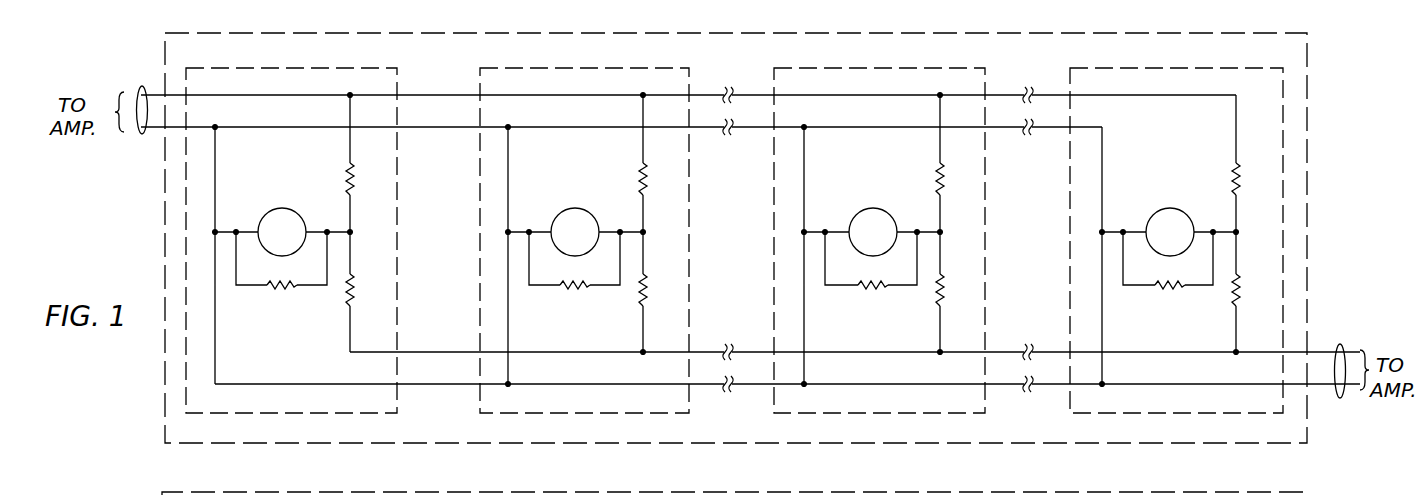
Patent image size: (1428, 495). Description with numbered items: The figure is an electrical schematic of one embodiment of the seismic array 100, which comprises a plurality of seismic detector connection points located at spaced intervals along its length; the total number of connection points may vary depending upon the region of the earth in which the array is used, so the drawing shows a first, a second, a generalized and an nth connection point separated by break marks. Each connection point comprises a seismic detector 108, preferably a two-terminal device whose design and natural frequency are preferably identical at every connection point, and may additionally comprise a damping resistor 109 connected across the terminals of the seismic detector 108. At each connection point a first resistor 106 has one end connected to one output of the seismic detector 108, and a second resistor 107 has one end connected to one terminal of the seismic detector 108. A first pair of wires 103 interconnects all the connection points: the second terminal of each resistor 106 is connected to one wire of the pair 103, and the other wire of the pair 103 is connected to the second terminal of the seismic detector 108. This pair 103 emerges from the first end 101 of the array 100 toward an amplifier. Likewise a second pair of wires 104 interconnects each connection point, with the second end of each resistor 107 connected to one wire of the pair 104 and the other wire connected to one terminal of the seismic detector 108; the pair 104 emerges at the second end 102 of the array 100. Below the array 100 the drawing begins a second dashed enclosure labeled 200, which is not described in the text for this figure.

The seismic array 100 is at (1292, 33).
The first end 101 is at (154, 131).
The second end 102 is at (1318, 350).
The first pair of wires 103 is at (142, 87).
The second pair of wires 104 is at (1338, 398).
The first resistor 106 is at (346, 178).
The second resistor 107 is at (345, 298).
The seismic detector 108 is at (279, 208).
The damping resistor 109 is at (272, 292).
The second sensor array assembly 200 is at (1292, 492).